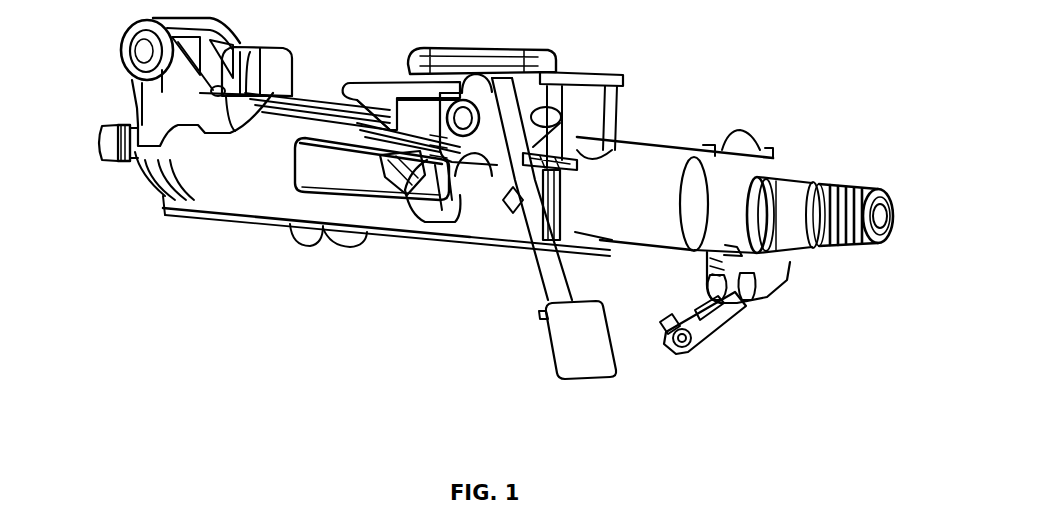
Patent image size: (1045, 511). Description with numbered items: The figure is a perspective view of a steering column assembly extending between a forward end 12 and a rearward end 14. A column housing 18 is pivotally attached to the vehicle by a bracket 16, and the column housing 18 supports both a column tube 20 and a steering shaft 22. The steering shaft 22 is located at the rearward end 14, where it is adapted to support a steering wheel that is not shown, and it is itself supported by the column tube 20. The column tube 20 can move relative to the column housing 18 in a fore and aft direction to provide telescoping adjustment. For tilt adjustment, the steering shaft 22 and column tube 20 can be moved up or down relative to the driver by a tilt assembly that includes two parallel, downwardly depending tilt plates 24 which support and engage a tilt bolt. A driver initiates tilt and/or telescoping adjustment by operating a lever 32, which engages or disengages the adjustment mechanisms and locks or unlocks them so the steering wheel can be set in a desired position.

The forward end 12 is at (75, 147).
The rearward end 14 is at (904, 192).
The bracket 16 is at (428, 50).
The column housing 18 is at (272, 190).
The column tube 20 is at (650, 152).
The steering shaft 22 is at (790, 233).
The tilt plates 24 is at (500, 95).
The lever 32 is at (578, 342).